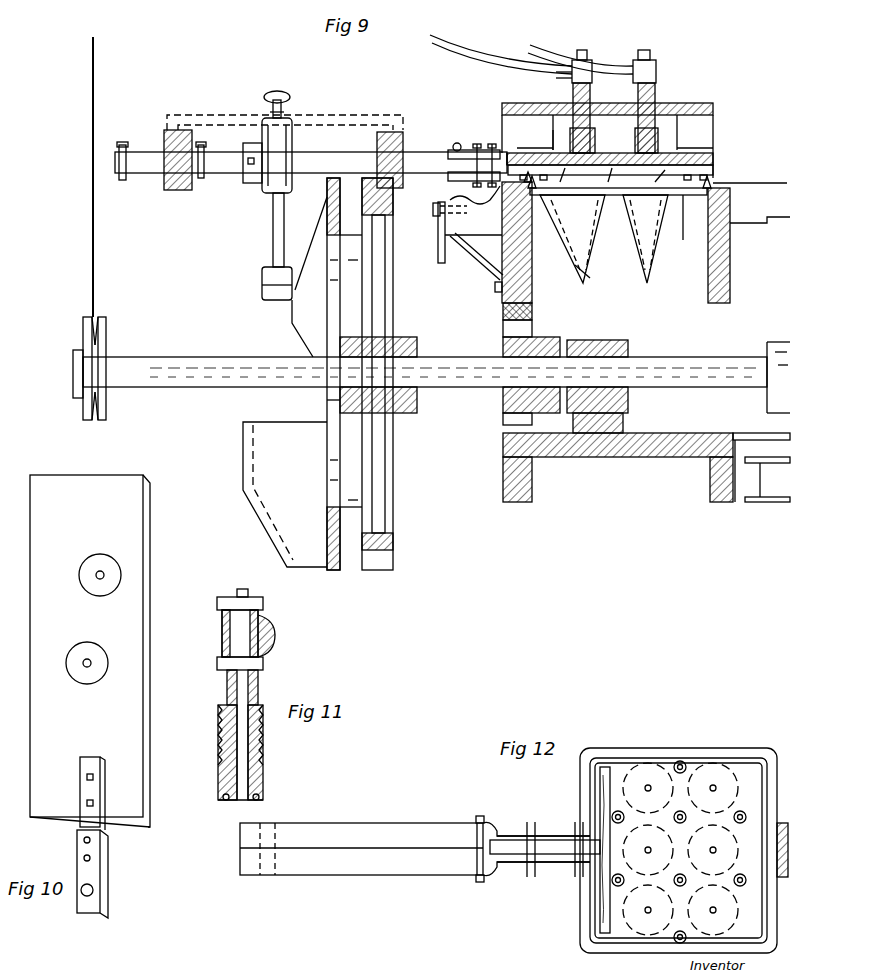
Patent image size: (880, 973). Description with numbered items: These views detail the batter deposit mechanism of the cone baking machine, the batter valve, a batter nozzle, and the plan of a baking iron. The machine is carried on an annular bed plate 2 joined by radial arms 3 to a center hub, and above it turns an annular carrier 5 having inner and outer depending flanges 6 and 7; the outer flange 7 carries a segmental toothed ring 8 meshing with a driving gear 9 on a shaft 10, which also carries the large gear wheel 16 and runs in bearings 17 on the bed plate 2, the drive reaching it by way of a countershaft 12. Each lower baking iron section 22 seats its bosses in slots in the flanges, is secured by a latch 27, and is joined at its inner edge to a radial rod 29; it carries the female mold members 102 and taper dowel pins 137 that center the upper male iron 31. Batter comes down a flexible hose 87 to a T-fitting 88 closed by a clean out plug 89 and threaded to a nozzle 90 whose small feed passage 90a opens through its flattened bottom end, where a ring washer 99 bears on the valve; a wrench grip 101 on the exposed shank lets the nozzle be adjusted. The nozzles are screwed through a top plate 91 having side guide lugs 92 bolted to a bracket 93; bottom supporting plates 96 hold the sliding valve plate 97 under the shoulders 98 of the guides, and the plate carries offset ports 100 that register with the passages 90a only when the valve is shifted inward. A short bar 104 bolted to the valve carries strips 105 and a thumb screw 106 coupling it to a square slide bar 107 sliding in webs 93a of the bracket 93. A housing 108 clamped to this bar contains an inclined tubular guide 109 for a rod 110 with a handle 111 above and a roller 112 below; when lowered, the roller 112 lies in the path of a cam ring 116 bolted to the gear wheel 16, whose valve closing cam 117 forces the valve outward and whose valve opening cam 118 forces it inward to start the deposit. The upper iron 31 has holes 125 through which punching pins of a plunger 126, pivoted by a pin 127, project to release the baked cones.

In FIG. 9, the bed plate 2 is at (607, 460).
In FIG. 9, the radial arms 3 is at (752, 445).
In FIG. 9, the rotatable carrier 5 is at (502, 220).
In FIG. 9, the inner flange 6 is at (714, 304).
In FIG. 9, the outer flange 7 is at (522, 300).
In FIG. 9, the toothed ring 8 is at (503, 312).
In FIG. 9, the driving gear 9 is at (503, 347).
In FIG. 9, the shaft 10 is at (432, 372).
In FIG. 9, the countershaft 12 is at (597, 340).
In FIG. 9, the large gear wheel 16 is at (385, 300).
In FIG. 9, the bearings 17 is at (782, 340).
In FIG. 9, the baking iron section 22 is at (684, 240).
In FIG. 9, the latch 27 is at (438, 250).
In FIG. 12, the radial rod 29 is at (330, 868).
In FIG. 12, the upper baking iron 31 is at (622, 770).
In FIG. 9, the flexible hose 87 is at (513, 58).
In FIG. 9, the T-fitting 88 is at (657, 73).
In FIG. 11, the T-fitting 88 is at (240, 642).
In FIG. 9, the clean out plug 89 is at (647, 52).
In FIG. 11, the clean out plug 89 is at (240, 579).
In FIG. 9, the nozzle 90 is at (637, 132).
In FIG. 11, the nozzle 90 is at (218, 765).
In FIG. 11, the feed passage 90a is at (243, 745).
In FIG. 9, the top plate 91 is at (676, 104).
In FIG. 9, the guide lugs 92 is at (536, 118).
In FIG. 9, the bracket 93 is at (236, 112).
In FIG. 9, the webs 93a is at (176, 190).
In FIG. 9, the bottom supporting plates 96 is at (714, 170).
In FIG. 12, the bottom supporting plates 96 is at (503, 828).
In FIG. 9, the sliding valve plate 97 is at (658, 174).
In FIG. 10, the sliding valve plate 97 is at (135, 592).
In FIG. 9, the shoulders 98 is at (714, 156).
In FIG. 9, the ring washers 99 is at (604, 239).
In FIG. 11, the ring washers 99 is at (260, 803).
In FIG. 9, the ports 100 is at (596, 174).
In FIG. 10, the ports 100 is at (96, 565).
In FIG. 11, the wrench grip 101 is at (256, 694).
In FIG. 9, the female mold member 102 is at (648, 252).
In FIG. 9, the short bar 104 is at (508, 156).
In FIG. 10, the short bar 104 is at (96, 787).
In FIG. 9, the strips 105 is at (466, 150).
In FIG. 10, the strips 105 is at (86, 870).
In FIG. 9, the thumb screw 106 is at (455, 144).
In FIG. 9, the slide bar 107 is at (308, 175).
In FIG. 9, the housing 108 is at (250, 172).
In FIG. 9, the tubular guide 109 is at (273, 186).
In FIG. 9, the rod 110 is at (276, 220).
In FIG. 9, the handle 111 is at (283, 93).
In FIG. 9, the roller 112 is at (270, 283).
In FIG. 9, the cam ring 116 is at (326, 403).
In FIG. 9, the valve closing cam 117 is at (305, 312).
In FIG. 9, the valve opening cam 118 is at (258, 475).
In FIG. 12, the holes 125 is at (681, 760).
In FIG. 12, the plunger 126 is at (603, 900).
In FIG. 12, the pin 127 is at (494, 860).
In FIG. 9, the taper dowel pins 137 is at (720, 185).
In FIG. 12, the taper dowel pins 137 is at (576, 830).